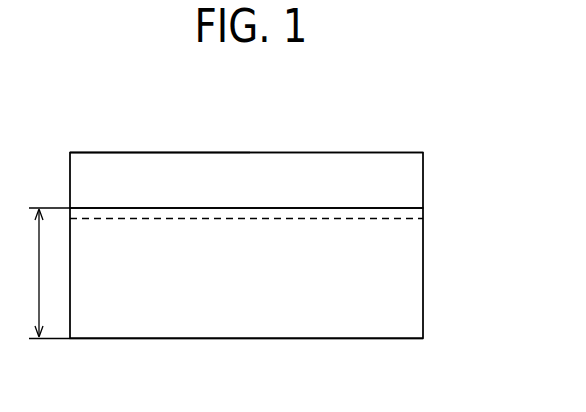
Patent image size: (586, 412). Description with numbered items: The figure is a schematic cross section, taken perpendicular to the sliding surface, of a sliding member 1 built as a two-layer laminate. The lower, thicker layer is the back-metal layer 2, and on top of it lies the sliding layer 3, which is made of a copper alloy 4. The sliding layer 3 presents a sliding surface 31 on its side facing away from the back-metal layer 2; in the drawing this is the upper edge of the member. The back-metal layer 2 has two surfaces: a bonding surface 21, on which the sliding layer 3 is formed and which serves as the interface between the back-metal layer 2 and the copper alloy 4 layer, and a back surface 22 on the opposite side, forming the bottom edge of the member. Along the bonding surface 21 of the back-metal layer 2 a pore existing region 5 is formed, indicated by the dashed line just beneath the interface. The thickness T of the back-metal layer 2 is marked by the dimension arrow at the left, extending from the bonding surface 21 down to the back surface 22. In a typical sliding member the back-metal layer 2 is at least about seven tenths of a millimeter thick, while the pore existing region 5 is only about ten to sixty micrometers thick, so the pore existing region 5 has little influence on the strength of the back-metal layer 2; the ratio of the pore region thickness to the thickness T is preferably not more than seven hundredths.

The sliding member 1 is at (410, 137).
The back-metal layer 2 is at (394, 313).
The sliding layer 3 is at (404, 178).
The copper alloy 4 is at (318, 168).
The pore existing region 5 is at (401, 213).
The bonding surface 21 is at (82, 206).
The back surface 22 is at (88, 339).
The sliding surface 31 is at (108, 152).
The thickness of the back-metal layer T is at (45, 273).